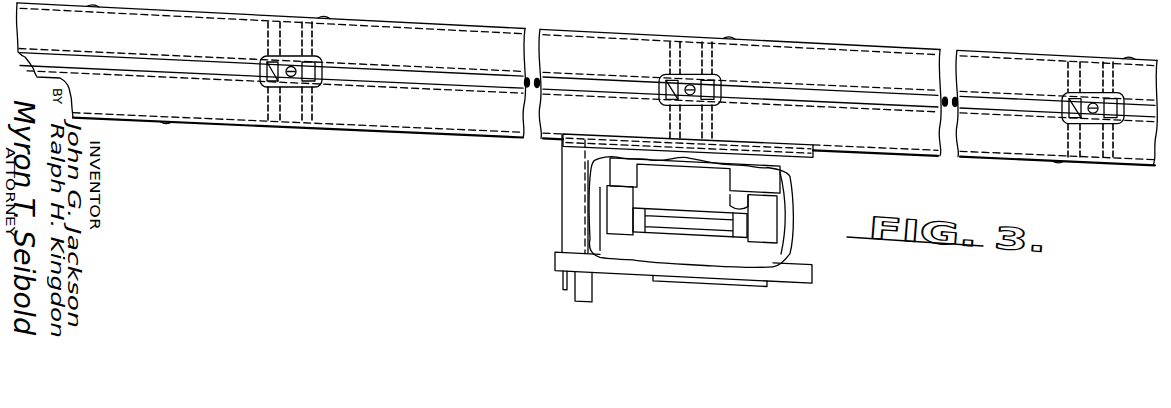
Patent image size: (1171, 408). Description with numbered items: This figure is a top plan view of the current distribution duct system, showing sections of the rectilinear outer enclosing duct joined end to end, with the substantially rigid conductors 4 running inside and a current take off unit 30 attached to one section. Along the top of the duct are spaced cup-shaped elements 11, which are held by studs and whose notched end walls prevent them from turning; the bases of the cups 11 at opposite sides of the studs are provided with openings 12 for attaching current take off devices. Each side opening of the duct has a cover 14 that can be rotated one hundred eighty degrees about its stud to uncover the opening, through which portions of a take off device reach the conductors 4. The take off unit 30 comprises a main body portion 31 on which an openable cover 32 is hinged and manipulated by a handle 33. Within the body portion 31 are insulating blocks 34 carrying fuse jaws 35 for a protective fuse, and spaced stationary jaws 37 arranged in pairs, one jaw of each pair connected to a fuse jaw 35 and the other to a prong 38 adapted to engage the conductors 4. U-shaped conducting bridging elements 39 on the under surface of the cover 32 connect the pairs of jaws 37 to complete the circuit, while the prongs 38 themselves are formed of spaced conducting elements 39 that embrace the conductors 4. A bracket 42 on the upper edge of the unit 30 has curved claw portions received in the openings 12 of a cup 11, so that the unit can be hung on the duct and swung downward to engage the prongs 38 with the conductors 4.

The conductor sections 4 is at (525, 73).
The cup-shaped elements 11 is at (317, 58).
The openings 12 is at (262, 84).
The cover 14 is at (386, 21).
The current take off unit 30 is at (797, 175).
The main body portion 31 is at (797, 202).
The openable cover 32 is at (785, 274).
The handle 33 is at (592, 297).
The insulating blocks 34 is at (733, 175).
The fuse jaws 35 is at (617, 227).
The stationary jaws 37 is at (597, 200).
The prongs 38 is at (692, 235).
The U-shaped conducting bridging elements 39 is at (600, 231).
The bracket 42 is at (713, 120).